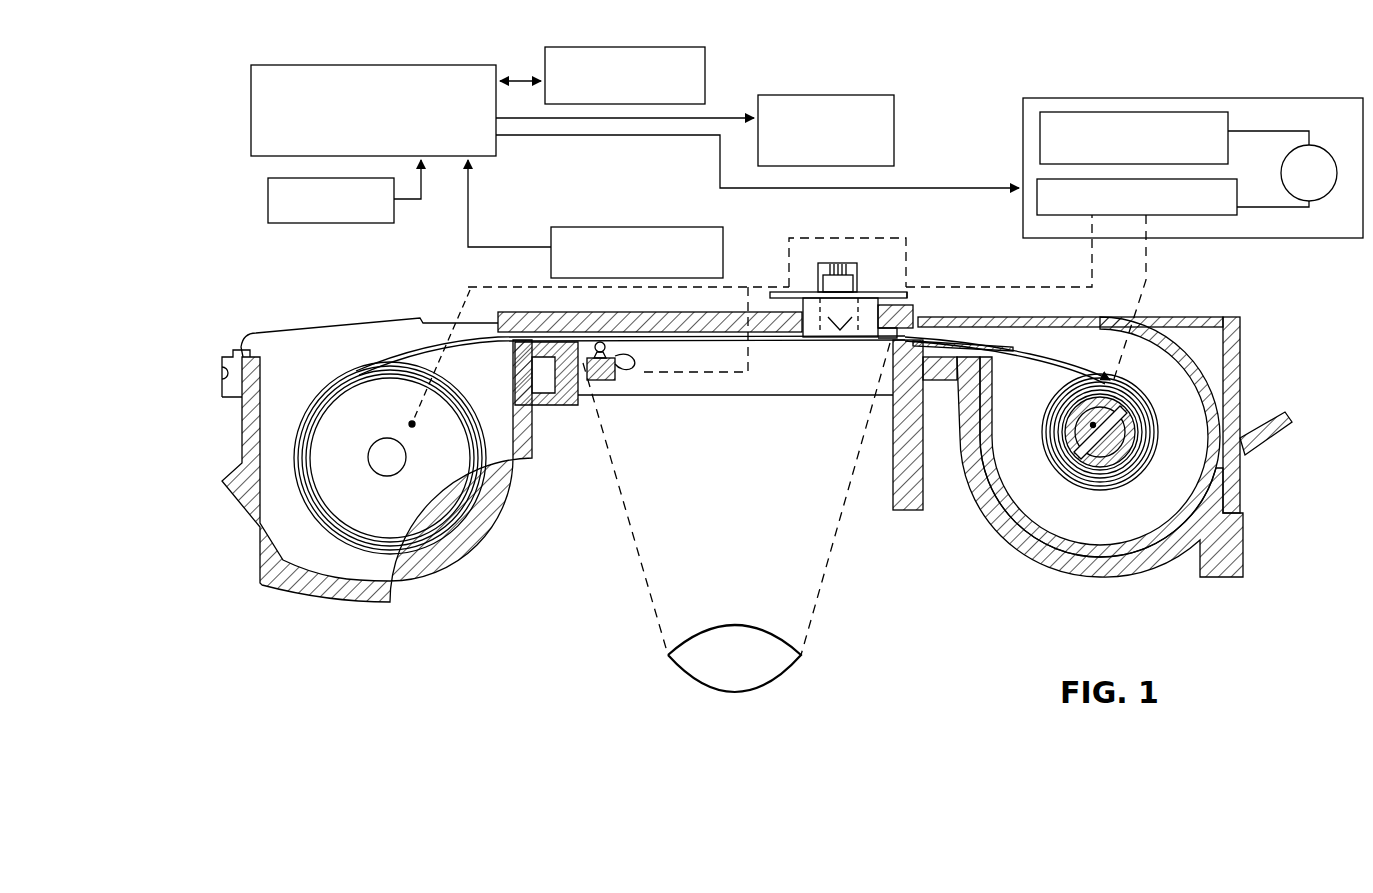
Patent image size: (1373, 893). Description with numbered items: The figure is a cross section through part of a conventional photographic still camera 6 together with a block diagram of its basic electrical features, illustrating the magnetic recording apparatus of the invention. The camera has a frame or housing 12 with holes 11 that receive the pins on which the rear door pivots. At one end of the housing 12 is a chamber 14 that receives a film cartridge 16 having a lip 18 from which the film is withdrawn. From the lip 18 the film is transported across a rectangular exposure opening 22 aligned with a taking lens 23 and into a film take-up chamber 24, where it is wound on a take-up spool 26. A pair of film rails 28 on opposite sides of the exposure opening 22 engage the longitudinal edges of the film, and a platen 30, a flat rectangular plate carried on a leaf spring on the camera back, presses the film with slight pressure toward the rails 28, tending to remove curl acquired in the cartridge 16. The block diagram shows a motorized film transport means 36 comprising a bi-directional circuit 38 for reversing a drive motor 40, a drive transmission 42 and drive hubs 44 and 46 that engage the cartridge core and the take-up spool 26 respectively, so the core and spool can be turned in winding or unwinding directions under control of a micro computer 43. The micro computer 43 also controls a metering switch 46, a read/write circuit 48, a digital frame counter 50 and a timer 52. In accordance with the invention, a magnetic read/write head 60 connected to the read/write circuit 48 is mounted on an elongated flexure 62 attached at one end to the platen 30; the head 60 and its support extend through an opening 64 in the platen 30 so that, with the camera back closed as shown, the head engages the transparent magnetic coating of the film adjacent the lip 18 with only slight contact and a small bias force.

The photographic still camera 6 is at (336, 631).
The holes 11 is at (222, 372).
The frame or housing 12 is at (1010, 527).
The chamber 14 is at (1240, 350).
The film cartridge 16 is at (1195, 317).
The lip 18 is at (1020, 317).
The rectangular exposure opening 22 is at (580, 417).
The taking lens 23 is at (795, 670).
The film take-up chamber 24 is at (243, 427).
The take-up spool 26 is at (323, 493).
The film rails 28 is at (773, 341).
The platen 30 is at (520, 312).
The motorized film transport means 36 is at (1085, 98).
The bi-directional circuit 38 is at (1170, 112).
The drive motor 40 is at (1320, 200).
The drive transmission 42 is at (1037, 207).
The micro computer 43 is at (343, 65).
The drive hub 44 is at (1103, 436).
The metering switch 46 is at (615, 227).
The read/write circuit 48 is at (818, 95).
The digital frame counter 50 is at (665, 47).
The timer 52 is at (268, 208).
The magnetic read/write head 60 is at (840, 315).
The elongated flexure 62 is at (886, 289).
The opening 64 is at (907, 296).